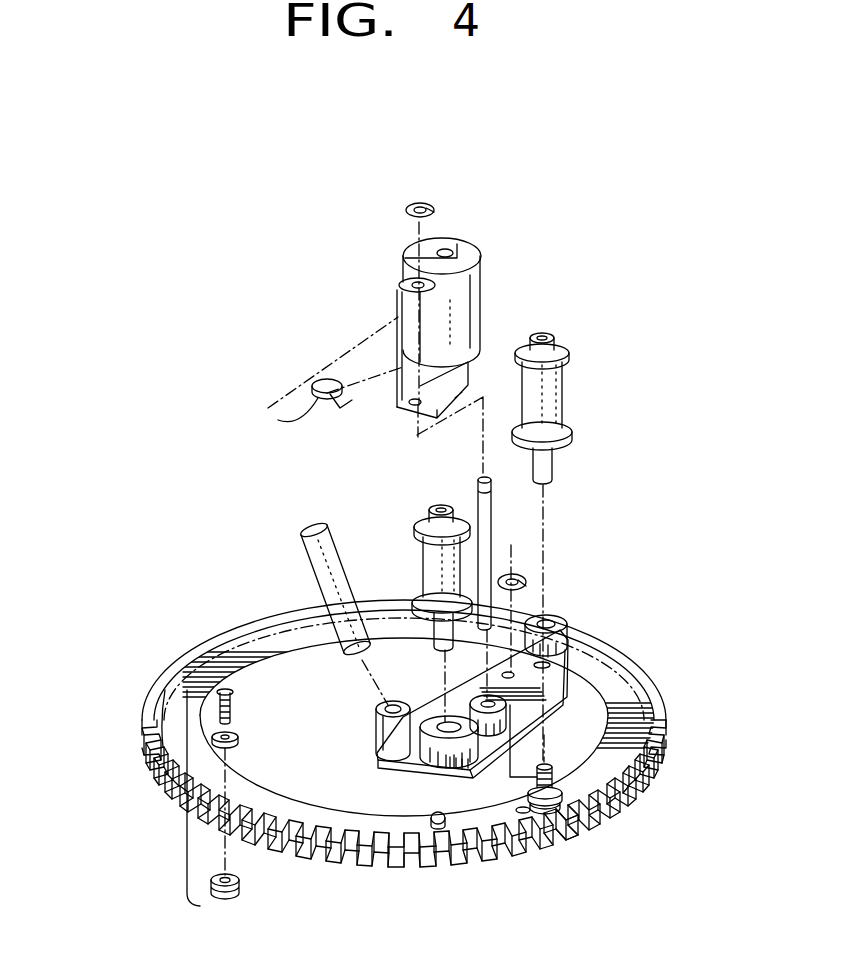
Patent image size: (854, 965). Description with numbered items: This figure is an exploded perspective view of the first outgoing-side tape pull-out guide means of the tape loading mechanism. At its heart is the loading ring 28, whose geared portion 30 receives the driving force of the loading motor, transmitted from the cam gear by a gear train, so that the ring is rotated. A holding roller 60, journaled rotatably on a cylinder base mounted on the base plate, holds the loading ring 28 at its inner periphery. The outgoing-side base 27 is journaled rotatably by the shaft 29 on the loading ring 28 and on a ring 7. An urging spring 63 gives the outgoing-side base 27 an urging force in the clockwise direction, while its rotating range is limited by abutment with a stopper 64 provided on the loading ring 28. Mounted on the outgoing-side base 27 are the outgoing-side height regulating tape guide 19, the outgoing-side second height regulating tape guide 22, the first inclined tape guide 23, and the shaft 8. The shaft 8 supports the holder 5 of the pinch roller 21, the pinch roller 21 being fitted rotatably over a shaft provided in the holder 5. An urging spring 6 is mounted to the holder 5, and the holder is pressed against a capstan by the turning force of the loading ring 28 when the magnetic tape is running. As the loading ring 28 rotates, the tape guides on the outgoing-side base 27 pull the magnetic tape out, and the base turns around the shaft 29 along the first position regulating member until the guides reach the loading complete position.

The holder 5 is at (397, 308).
The urging spring 6 is at (314, 385).
The ring 7 is at (528, 582).
The shaft 8 is at (492, 518).
The outgoing-side height regulating tape guide 19 is at (565, 390).
The pinch roller 21 is at (470, 253).
The outgoing-side second height regulating tape guide 22 is at (428, 568).
The first inclined tape guide 23 is at (305, 560).
The outgoing-side base 27 is at (572, 690).
The loading ring 28 is at (645, 742).
The shaft 29 is at (560, 768).
The geared portion 30 is at (481, 870).
The holding roller 60 is at (146, 740).
The urging spring 63 is at (560, 835).
The stopper 64 is at (437, 824).